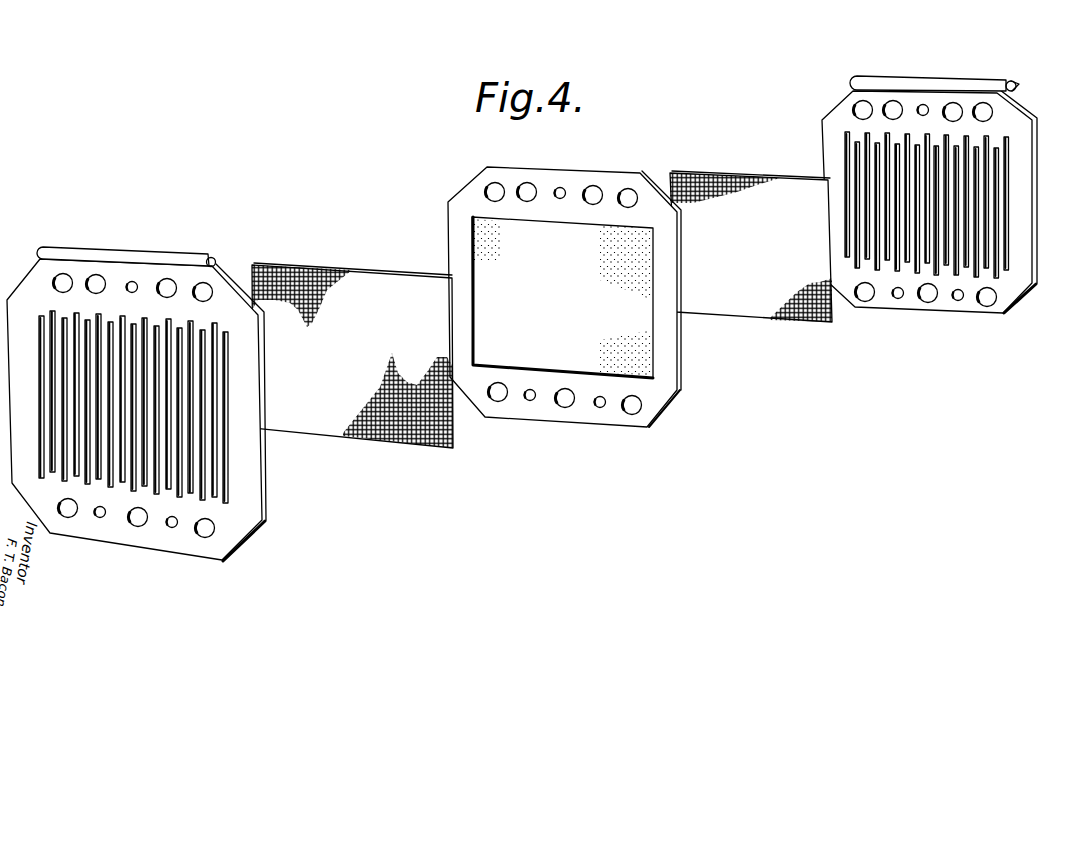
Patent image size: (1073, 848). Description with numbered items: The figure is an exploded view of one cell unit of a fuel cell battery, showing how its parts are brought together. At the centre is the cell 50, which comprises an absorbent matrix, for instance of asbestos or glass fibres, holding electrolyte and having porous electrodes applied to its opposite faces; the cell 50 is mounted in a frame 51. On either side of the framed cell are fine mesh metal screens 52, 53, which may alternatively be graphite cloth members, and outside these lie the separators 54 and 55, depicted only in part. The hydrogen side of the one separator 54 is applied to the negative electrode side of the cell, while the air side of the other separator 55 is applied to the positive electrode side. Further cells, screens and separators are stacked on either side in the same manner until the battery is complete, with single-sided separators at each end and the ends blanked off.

The cell 50 is at (471, 243).
The frame 51 is at (533, 278).
The fine mesh metal screen 52 is at (323, 238).
The fine mesh metal screen 53 is at (740, 175).
The separator 54 is at (147, 256).
The separator 55 is at (935, 48).